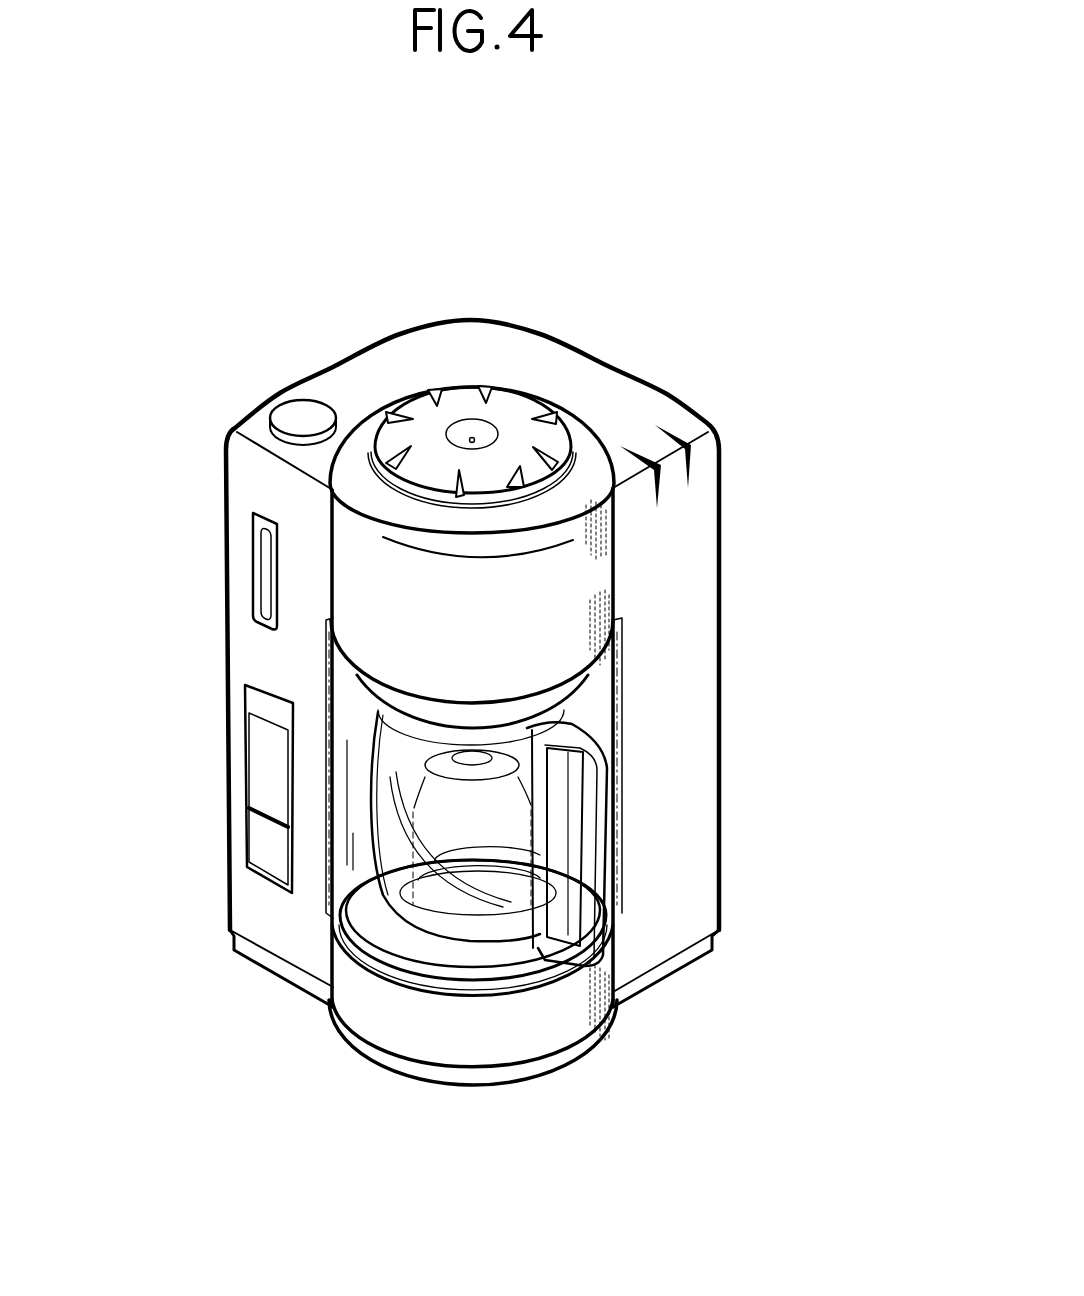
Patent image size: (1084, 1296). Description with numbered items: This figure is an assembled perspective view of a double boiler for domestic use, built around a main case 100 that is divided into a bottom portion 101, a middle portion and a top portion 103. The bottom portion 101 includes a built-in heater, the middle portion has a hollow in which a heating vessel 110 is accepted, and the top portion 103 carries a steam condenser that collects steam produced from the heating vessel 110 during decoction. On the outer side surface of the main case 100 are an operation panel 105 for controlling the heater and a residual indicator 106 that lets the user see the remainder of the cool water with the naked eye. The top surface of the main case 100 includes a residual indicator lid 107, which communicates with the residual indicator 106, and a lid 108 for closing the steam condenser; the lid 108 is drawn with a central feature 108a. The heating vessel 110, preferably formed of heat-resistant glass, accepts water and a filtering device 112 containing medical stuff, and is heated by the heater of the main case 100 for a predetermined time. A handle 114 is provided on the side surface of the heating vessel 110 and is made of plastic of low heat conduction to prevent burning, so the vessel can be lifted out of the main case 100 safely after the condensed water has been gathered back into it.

The main case 100 is at (730, 673).
The bottom portion 101 is at (383, 1022).
The top portion 103 is at (580, 590).
The operation panel 105 is at (257, 845).
The residual indicator 106 is at (262, 576).
The residual indicator lid 107 is at (300, 413).
The lid 108 is at (512, 407).
The lid center 108a is at (472, 437).
The heating vessel 110 is at (381, 742).
The filtering device 112 is at (387, 910).
The handle 114 is at (600, 872).